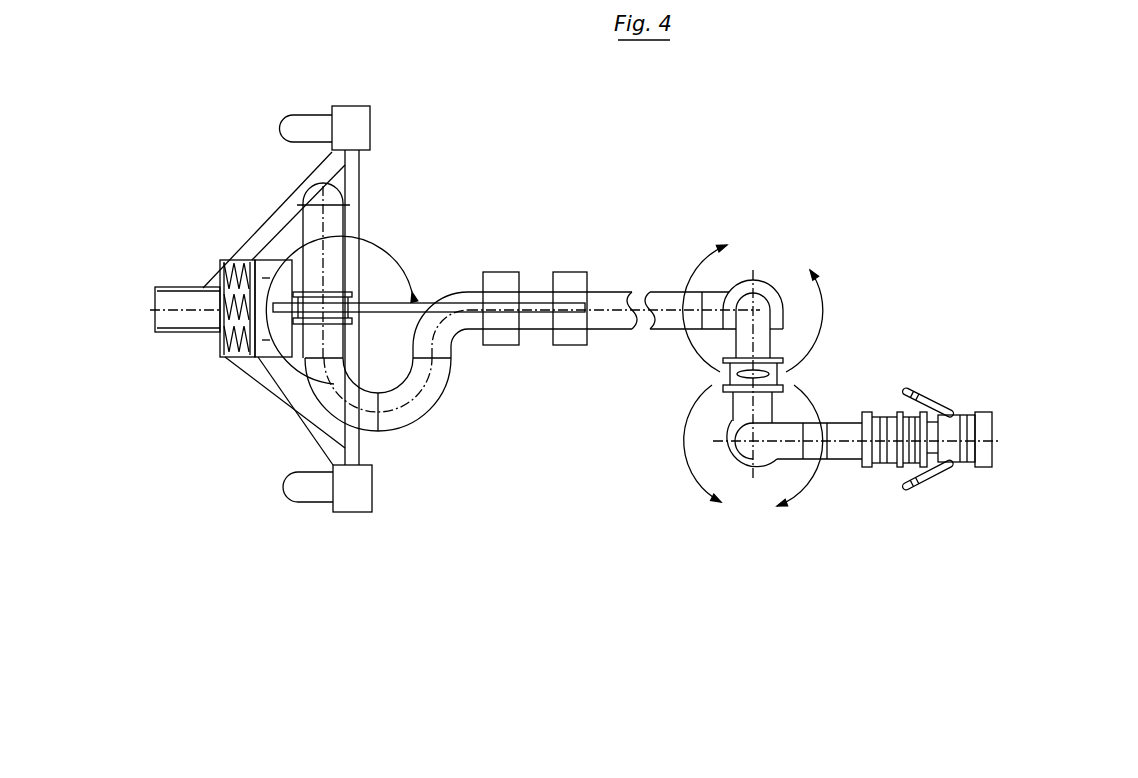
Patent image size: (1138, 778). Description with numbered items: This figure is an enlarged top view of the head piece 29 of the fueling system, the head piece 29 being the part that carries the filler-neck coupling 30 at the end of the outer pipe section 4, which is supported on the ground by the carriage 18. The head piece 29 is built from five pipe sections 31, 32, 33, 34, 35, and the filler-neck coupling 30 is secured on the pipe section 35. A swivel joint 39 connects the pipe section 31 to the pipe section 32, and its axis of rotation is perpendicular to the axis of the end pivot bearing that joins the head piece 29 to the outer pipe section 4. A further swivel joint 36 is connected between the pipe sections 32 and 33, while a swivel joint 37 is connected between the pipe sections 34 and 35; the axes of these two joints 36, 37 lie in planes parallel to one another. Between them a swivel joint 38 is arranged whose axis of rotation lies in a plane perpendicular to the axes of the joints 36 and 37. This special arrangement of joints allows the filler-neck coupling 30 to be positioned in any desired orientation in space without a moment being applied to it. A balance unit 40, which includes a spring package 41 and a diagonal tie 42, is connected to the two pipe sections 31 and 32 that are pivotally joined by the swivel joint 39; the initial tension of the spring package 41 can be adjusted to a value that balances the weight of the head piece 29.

The outer pipe section 4 is at (157, 317).
The carriage 18 is at (352, 103).
The head piece 29 is at (602, 287).
The filler-neck coupling 30 is at (972, 413).
The pipe section 31 is at (335, 213).
The pipe section 32 is at (418, 405).
The pipe section 33 is at (740, 338).
The pipe section 34 is at (740, 404).
The pipe section 35 is at (782, 453).
The swivel joint 36 is at (730, 295).
The swivel joint 37 is at (770, 421).
The swivel joint 38 is at (758, 370).
The swivel joint 39 is at (372, 246).
The balance unit 40 is at (282, 359).
The spring package 41 is at (225, 357).
The diagonal tie 42 is at (413, 305).